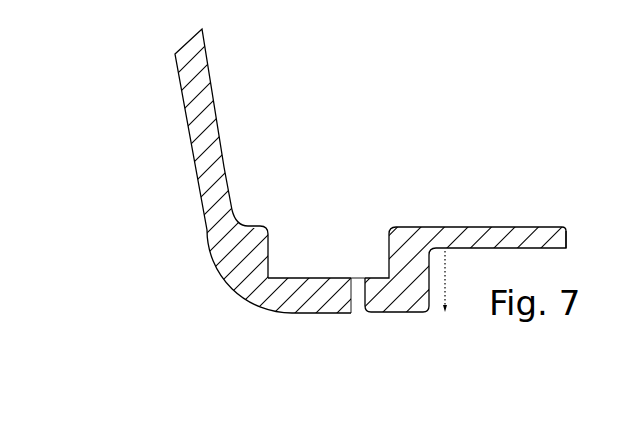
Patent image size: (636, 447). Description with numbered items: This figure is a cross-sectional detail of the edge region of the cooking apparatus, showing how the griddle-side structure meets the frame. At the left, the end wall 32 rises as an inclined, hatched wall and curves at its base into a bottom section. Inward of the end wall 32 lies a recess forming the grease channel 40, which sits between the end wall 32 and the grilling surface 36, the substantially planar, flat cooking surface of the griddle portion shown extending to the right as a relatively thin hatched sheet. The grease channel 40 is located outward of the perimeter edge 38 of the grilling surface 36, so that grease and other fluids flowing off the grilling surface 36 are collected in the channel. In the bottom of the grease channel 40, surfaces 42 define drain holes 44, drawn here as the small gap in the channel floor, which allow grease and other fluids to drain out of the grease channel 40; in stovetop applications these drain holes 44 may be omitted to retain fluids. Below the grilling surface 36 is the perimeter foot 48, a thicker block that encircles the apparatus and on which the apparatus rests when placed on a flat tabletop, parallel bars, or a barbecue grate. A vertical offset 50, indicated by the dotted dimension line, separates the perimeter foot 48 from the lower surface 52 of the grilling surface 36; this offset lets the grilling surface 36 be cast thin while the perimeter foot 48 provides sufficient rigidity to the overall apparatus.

The end wall 32 is at (184, 117).
The grilling surface 36 is at (485, 224).
The perimeter edge 38 is at (386, 227).
The grease channel 40 is at (318, 275).
The surfaces defining drain holes 42 is at (343, 306).
The drain holes 44 is at (355, 309).
The perimeter foot 48 is at (400, 311).
The vertical offset 50 is at (446, 290).
The lower surface 52 is at (564, 246).